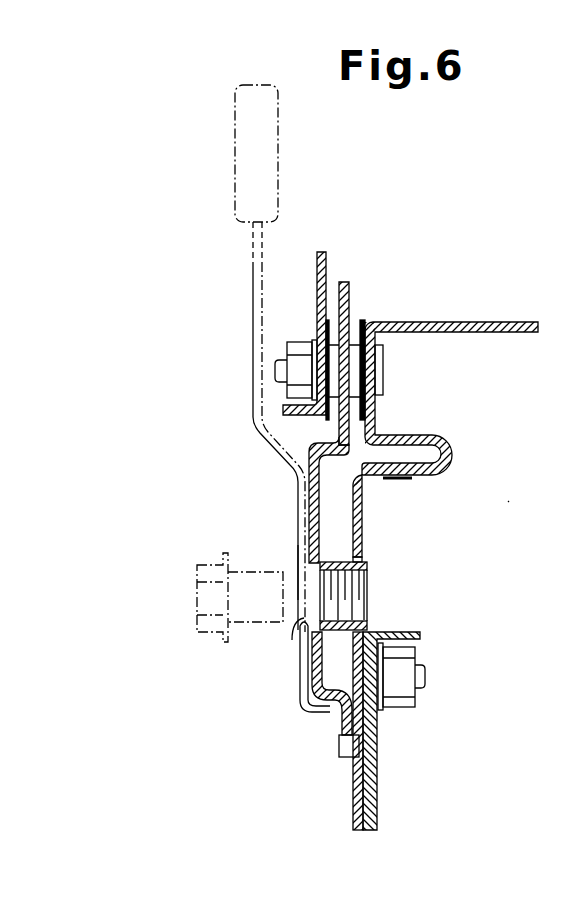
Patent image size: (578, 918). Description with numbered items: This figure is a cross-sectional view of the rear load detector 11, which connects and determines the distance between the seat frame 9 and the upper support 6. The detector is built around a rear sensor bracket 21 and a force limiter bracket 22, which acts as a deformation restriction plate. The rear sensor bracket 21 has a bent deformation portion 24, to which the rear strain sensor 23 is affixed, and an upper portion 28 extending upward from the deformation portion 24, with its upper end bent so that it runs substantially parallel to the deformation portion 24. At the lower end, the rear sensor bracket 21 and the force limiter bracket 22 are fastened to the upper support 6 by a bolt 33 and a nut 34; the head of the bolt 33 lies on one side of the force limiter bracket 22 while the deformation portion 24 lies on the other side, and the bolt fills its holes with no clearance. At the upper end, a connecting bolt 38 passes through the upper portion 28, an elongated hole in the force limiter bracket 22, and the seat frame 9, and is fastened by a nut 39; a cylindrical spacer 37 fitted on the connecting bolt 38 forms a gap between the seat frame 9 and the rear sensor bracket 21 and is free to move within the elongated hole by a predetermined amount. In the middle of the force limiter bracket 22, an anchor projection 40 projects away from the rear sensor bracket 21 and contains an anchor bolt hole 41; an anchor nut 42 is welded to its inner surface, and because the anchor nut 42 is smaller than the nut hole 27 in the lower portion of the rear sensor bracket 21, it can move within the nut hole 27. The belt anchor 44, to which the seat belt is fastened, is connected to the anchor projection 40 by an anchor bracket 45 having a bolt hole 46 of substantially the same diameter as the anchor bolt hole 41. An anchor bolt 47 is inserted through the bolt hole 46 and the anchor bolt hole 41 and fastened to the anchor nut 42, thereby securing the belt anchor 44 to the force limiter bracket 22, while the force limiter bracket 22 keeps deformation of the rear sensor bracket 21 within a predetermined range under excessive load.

The upper support 6 is at (358, 793).
The seat frame 9 is at (326, 262).
The rear load detector 11 is at (514, 499).
The rear sensor bracket 21 is at (525, 322).
The force limiter bracket 22 is at (350, 290).
The rear strain sensor 23 is at (406, 478).
The deformation portion 24 is at (454, 448).
The nut hole 27 is at (365, 562).
The upper portion 28 is at (381, 409).
The bolt 33 is at (303, 710).
The nut 34 is at (400, 708).
The cylindrical spacer 37 is at (365, 332).
The connecting bolt 38 is at (385, 361).
The nut 39 is at (300, 346).
The anchor projection 40 is at (310, 500).
The anchor bolt hole 41 is at (300, 622).
The anchor nut 42 is at (369, 570).
The belt anchor 44 is at (280, 125).
The anchor bracket 45 is at (252, 300).
The bolt hole 46 is at (298, 578).
The anchor bolt 47 is at (197, 597).